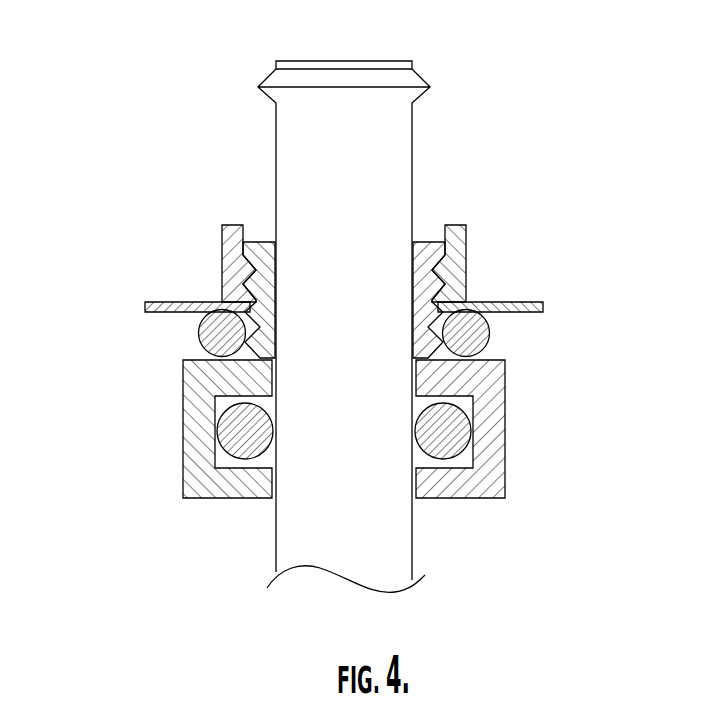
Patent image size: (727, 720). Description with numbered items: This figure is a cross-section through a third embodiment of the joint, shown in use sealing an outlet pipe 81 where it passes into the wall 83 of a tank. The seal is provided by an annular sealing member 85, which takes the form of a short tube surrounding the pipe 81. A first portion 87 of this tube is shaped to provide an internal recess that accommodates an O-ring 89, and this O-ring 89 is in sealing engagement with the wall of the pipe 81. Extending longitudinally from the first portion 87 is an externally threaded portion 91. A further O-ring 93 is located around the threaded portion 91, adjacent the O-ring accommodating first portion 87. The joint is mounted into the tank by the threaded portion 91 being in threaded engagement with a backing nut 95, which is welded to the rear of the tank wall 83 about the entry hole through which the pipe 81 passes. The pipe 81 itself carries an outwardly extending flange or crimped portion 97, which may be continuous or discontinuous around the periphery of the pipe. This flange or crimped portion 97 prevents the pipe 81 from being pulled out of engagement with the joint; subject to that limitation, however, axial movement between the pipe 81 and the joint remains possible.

The outlet pipe 81 is at (375, 157).
The outwardly extending flange or crimped portion 97 is at (422, 72).
The backing nut 95 is at (230, 252).
The externally threaded portion 91 is at (447, 270).
The tank wall 83 is at (518, 300).
The further O-ring 93 is at (197, 341).
The first portion 87 is at (197, 432).
The annular sealing member 85 is at (533, 449).
The O-ring 89 is at (252, 445).